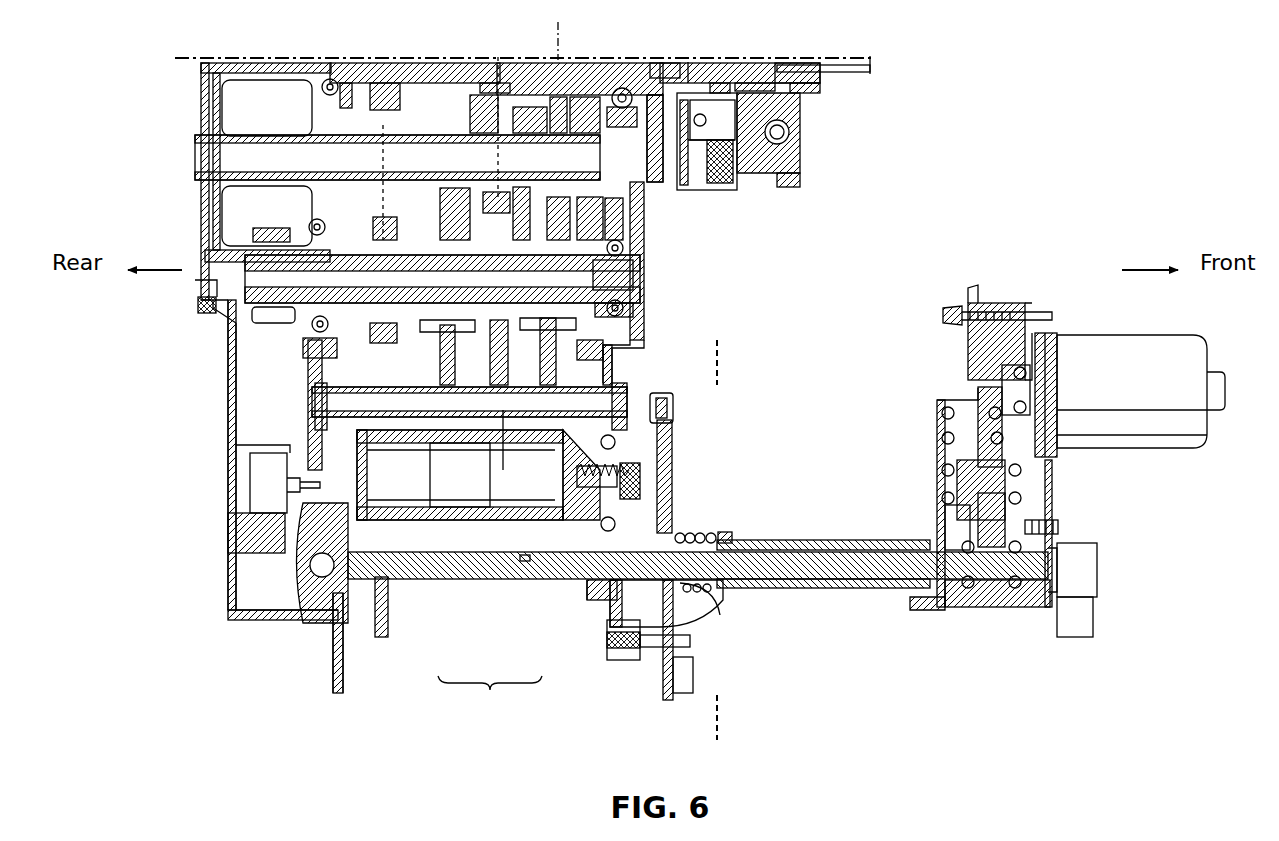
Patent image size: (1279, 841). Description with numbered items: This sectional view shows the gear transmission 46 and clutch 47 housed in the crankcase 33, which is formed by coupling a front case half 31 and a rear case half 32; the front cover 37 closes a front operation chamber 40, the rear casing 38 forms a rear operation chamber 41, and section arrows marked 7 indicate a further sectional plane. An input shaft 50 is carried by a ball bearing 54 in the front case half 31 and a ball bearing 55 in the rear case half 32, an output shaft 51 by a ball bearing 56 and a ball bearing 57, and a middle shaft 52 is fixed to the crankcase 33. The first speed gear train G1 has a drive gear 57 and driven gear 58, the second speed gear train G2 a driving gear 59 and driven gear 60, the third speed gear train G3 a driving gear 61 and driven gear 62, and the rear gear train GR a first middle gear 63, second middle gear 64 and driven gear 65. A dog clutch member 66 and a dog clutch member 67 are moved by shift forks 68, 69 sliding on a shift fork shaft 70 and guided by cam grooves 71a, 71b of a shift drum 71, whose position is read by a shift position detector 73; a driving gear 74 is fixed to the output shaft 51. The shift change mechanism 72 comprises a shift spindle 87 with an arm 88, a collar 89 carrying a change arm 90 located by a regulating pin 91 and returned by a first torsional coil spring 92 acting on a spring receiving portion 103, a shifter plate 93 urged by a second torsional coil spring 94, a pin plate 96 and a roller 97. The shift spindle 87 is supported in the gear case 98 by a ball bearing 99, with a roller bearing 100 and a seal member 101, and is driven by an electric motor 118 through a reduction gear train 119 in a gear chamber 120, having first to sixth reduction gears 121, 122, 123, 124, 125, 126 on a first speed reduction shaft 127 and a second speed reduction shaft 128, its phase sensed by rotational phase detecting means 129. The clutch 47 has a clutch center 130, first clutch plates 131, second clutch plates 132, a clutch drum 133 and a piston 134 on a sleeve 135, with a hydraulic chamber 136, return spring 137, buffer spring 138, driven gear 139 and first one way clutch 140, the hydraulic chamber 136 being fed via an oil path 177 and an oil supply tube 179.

The section line 7 is at (722, 353).
The front case half 31 is at (605, 605).
The rear case half 32 is at (347, 610).
The crankcase 33 is at (490, 694).
The front cover 37 is at (975, 290).
The rear casing 38 is at (230, 370).
The front operation chamber 40 is at (762, 316).
The rear operation chamber 41 is at (263, 393).
The gear transmission 46 is at (607, 348).
The clutch 47 is at (740, 192).
The input shaft 50 is at (622, 87).
The output shaft 51 is at (633, 276).
The middle shaft 52 is at (488, 108).
The ball bearing 54 is at (630, 112).
The ball bearing 55 is at (330, 78).
The ball bearing 56 is at (632, 258).
The drive gear 57 is at (497, 100).
The driven gear 58 is at (448, 388).
The driving gear 59 is at (582, 95).
The driven gear 60 is at (614, 215).
The driving gear 61 is at (407, 82).
The driven gear 62 is at (336, 333).
The first middle gear 63 is at (565, 30).
The second middle gear 64 is at (530, 122).
The driven gear 65 is at (503, 445).
The dog clutch member 66 is at (380, 225).
The dog clutch member 67 is at (640, 315).
The shift fork 68 is at (400, 343).
The shift fork 69 is at (562, 365).
The shift fork shaft 70 is at (386, 445).
The shift drum 71 is at (425, 525).
The cam groove 71a is at (480, 470).
The cam groove 71b is at (546, 465).
The shift change mechanism 72 is at (736, 535).
The shift position detector 73 is at (257, 490).
The driving gear 74 is at (270, 323).
The shift spindle 87 is at (822, 555).
The arm 88 is at (726, 588).
The collar 89 is at (692, 600).
The change arm 90 is at (670, 700).
The regulating pin 91 is at (692, 642).
The first torsional coil spring 92 is at (692, 532).
The shifter plate 93 is at (673, 455).
The second torsional coil spring 94 is at (673, 415).
The pin plate 96 is at (606, 590).
The roller 97 is at (642, 498).
The gear case 98 is at (1030, 498).
The ball bearing 99 is at (1018, 592).
The roller bearing 100 is at (946, 602).
The seal member 101 is at (966, 592).
The spring receiving portion 103 is at (694, 668).
The electric motor 118 is at (1112, 395).
The reduction gear train 119 is at (982, 380).
The gear chamber 120 is at (950, 306).
The first reduction gear 121 is at (968, 398).
The second reduction gear 122 is at (940, 456).
The third reduction gear 123 is at (946, 396).
The fourth reduction gear 124 is at (950, 526).
The fifth reduction gear 125 is at (1040, 455).
The sixth reduction gear 126 is at (1060, 520).
The first speed reduction shaft 127 is at (1043, 422).
The second speed reduction shaft 128 is at (943, 490).
The rotational phase detecting means 129 is at (1094, 585).
The clutch center 130 is at (802, 108).
The first clutch plates 131 is at (745, 160).
The second clutch plates 132 is at (715, 183).
The clutch drum 133 is at (680, 145).
The piston 134 is at (660, 64).
The sleeve 135 is at (800, 92).
The hydraulic chamber 136 is at (722, 82).
The return spring 137 is at (760, 82).
The buffer spring 138 is at (790, 140).
The driven gear 139 is at (800, 180).
The first one way clutch 140 is at (785, 88).
The oil path 177 is at (690, 62).
The oil supply tube 179 is at (866, 78).
The first speed gear train G1 is at (490, 98).
The second speed gear train G2 is at (598, 195).
The third speed gear train G3 is at (376, 158).
The rear gear train GR is at (482, 197).